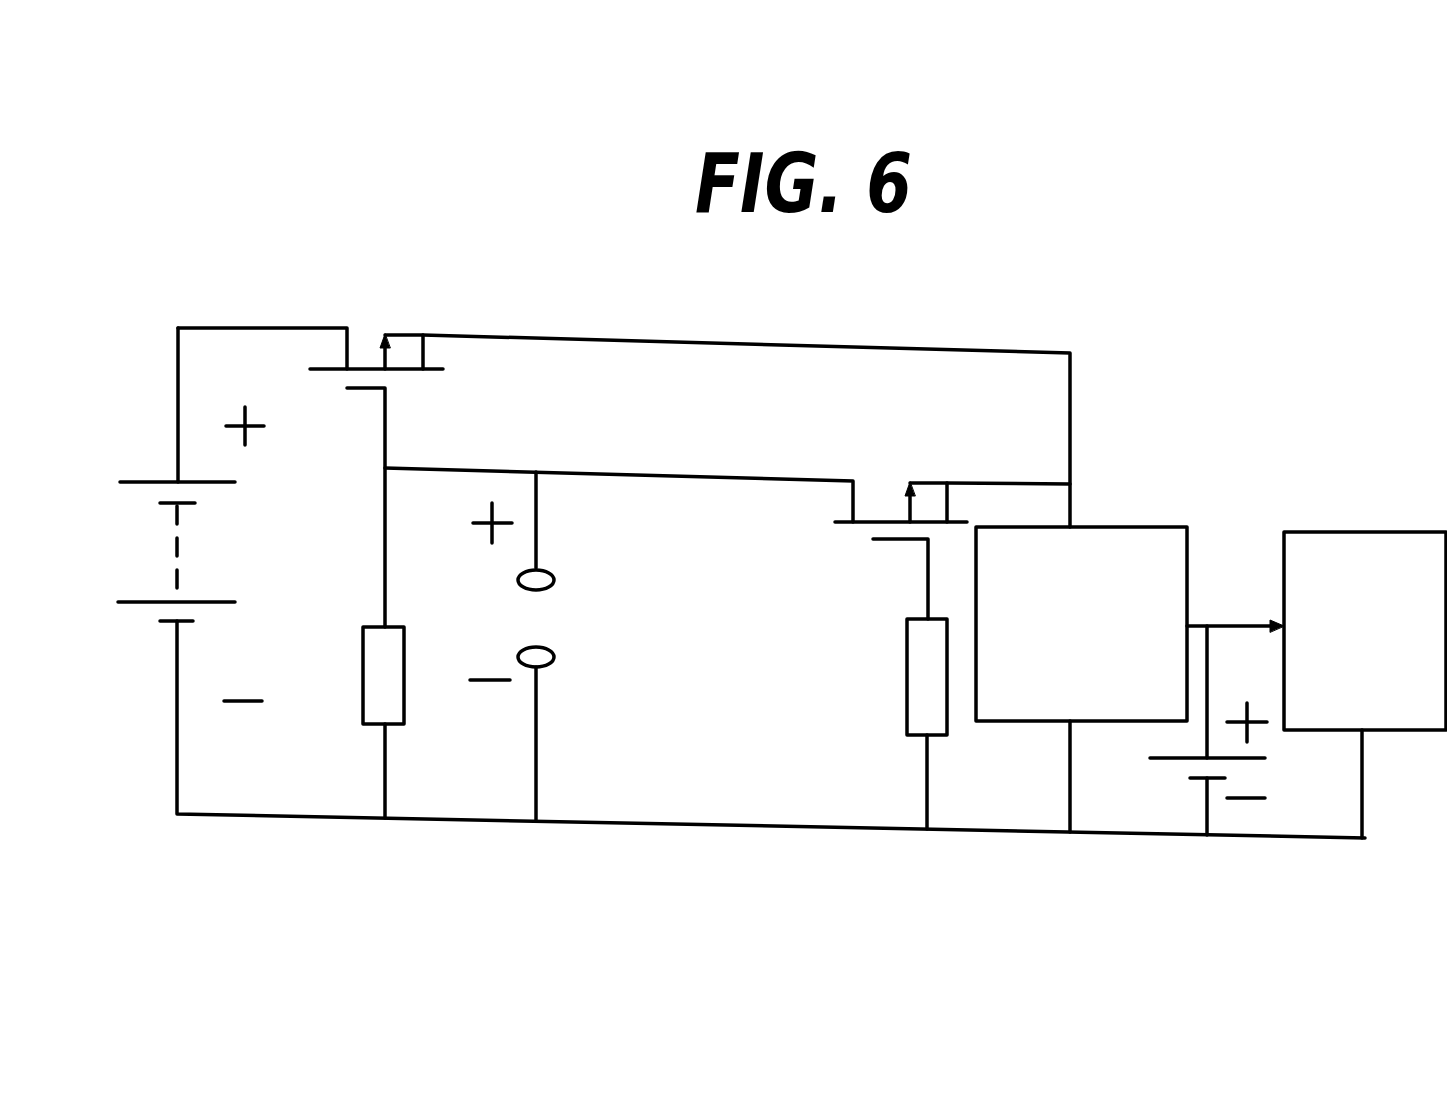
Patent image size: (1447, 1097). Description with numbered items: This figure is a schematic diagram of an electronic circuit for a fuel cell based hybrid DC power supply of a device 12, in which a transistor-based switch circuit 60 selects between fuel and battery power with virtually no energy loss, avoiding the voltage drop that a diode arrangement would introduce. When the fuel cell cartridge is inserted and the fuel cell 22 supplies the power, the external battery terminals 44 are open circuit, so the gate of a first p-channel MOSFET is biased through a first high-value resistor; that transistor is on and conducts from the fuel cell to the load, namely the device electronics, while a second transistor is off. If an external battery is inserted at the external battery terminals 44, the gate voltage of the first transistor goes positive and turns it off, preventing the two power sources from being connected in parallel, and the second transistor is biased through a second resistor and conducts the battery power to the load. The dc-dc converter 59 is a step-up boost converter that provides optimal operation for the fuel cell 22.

The transistor-based switch circuit 60 is at (438, 252).
The fuel cell 22 is at (195, 587).
The external battery terminals 44 is at (698, 563).
The dc-dc converter 59 is at (1081, 624).
The device 12 is at (1365, 685).